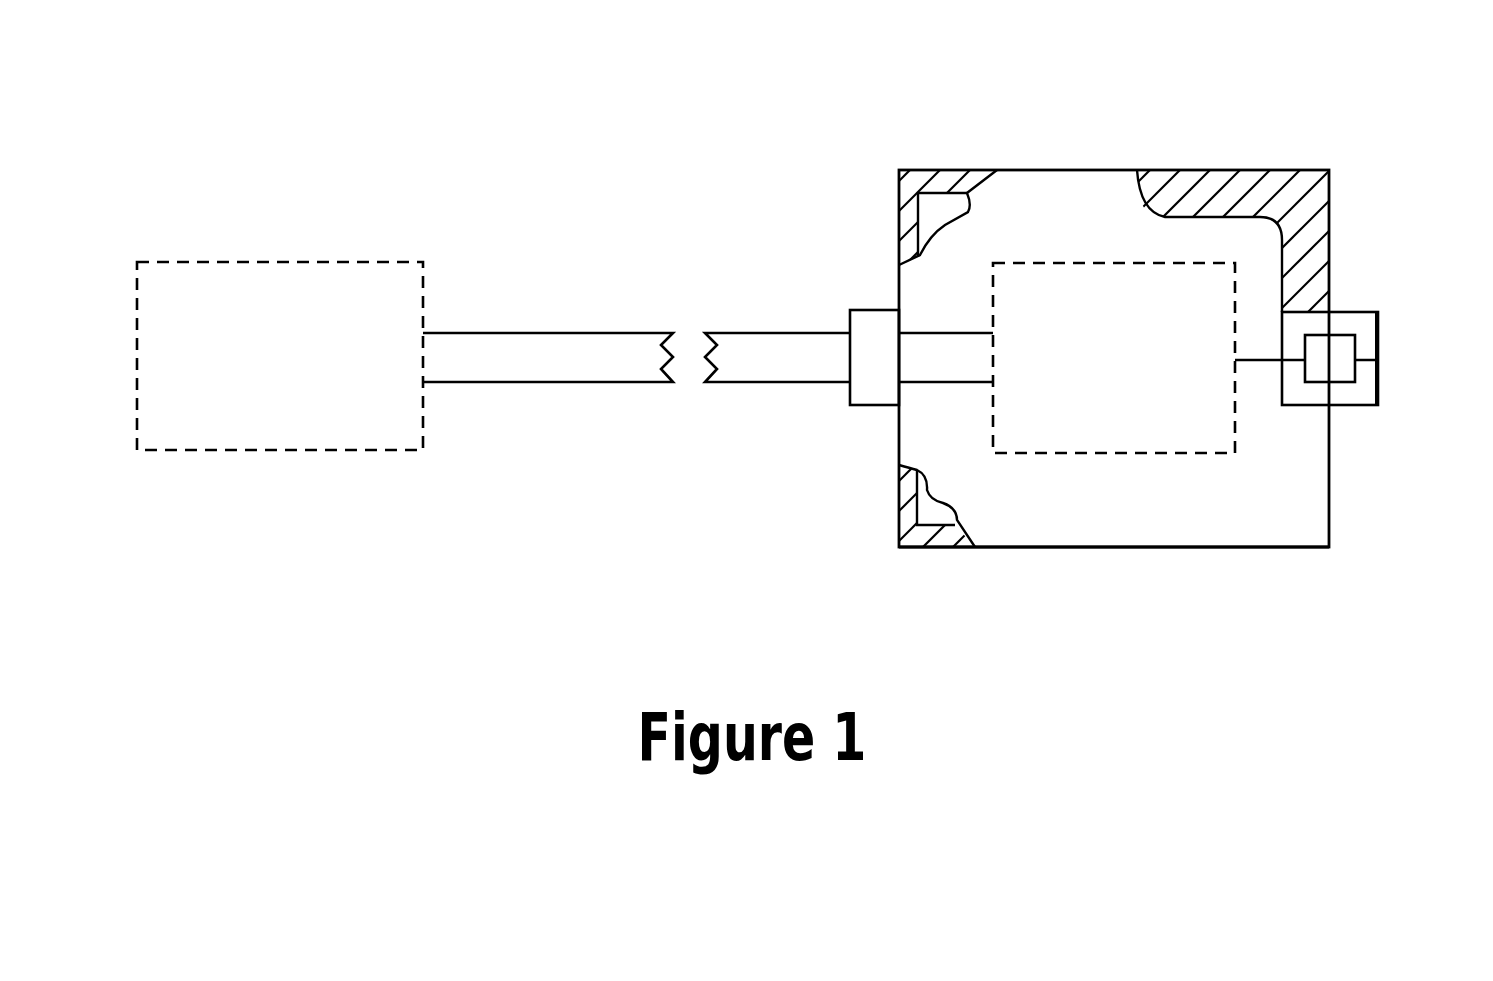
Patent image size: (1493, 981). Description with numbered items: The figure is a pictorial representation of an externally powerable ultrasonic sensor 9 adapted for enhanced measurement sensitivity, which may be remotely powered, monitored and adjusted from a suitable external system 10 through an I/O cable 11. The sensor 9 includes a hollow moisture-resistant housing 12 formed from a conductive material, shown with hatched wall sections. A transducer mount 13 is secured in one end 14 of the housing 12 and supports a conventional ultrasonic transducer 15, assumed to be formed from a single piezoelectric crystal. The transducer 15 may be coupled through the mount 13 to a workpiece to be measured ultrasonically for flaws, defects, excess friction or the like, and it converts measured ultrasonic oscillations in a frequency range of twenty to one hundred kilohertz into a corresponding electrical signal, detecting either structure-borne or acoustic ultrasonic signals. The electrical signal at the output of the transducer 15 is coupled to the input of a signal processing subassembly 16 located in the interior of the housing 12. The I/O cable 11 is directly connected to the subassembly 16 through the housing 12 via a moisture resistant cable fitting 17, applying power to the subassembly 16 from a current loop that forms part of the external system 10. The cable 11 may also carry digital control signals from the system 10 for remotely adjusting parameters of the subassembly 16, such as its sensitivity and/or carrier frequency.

The ultrasonic sensor 9 is at (1162, 93).
The external system 10 is at (337, 262).
The I/O cable 11 is at (565, 333).
The housing 12 is at (1240, 183).
The transducer mount 13 is at (1358, 405).
The end of the housing 14 is at (1290, 547).
The ultrasonic transducer 15 is at (1378, 362).
The signal processing subassembly 16 is at (1183, 453).
The cable fitting 17 is at (863, 405).